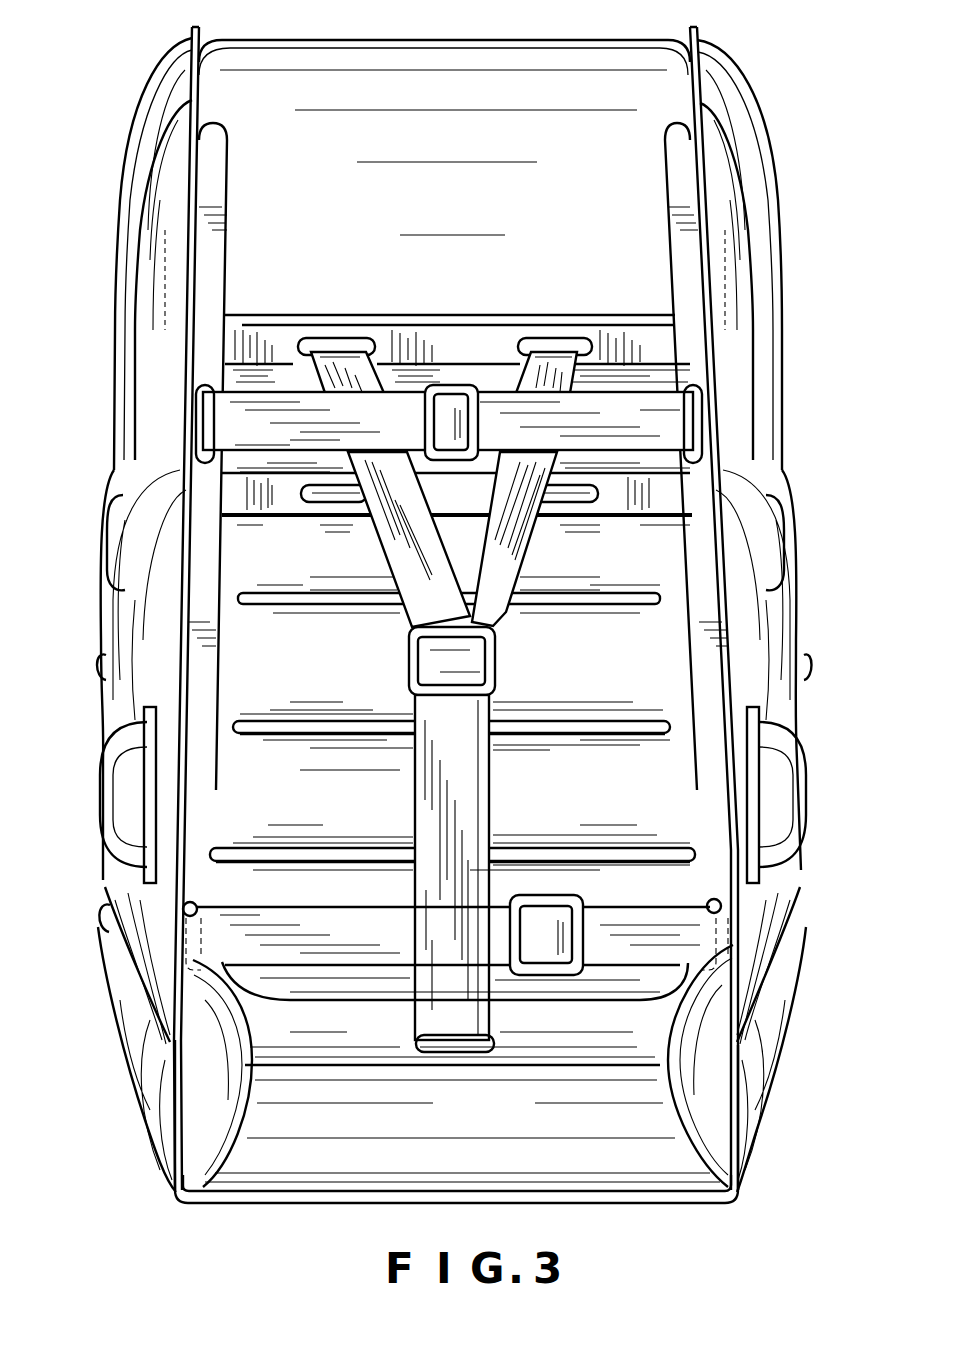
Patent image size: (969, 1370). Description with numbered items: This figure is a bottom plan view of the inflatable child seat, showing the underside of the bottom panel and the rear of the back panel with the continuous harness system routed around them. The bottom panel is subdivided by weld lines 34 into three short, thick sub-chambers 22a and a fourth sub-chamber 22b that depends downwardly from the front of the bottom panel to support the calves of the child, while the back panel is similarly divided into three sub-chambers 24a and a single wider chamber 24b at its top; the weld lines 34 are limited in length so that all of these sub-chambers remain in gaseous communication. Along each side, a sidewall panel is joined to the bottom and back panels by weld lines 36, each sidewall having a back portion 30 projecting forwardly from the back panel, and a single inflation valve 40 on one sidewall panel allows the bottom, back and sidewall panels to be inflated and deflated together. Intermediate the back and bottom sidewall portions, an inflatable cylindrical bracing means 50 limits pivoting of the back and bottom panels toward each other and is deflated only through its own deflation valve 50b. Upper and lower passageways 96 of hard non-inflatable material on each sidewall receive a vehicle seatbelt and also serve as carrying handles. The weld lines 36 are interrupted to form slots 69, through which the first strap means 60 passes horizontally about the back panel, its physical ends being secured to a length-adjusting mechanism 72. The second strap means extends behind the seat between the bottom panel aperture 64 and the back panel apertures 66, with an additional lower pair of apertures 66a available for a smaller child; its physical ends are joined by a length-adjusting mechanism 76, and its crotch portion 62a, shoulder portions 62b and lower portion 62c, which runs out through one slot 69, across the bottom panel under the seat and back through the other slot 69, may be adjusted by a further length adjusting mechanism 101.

The sub-chamber 22a is at (620, 775).
The fourth sub-chamber 22b is at (330, 1170).
The sub-chamber 24a is at (600, 330).
The wider chamber 24b is at (482, 74).
The back portion 30 is at (165, 75).
The weld lines 34 is at (492, 305).
The weld lines 36 is at (222, 150).
The inflation valve 40 is at (102, 930).
The bracing means 50 is at (101, 640).
The deflation valve 50b is at (98, 672).
The first releasable strap means 60 is at (295, 398).
The portion of second strap means 62a is at (418, 750).
The shoulder portions 62b is at (393, 530).
The portion of second strap means 62c is at (297, 935).
The bottom panel aperture 64 is at (460, 1052).
The back panel apertures 66 is at (322, 338).
The additional back panel apertures 66a is at (320, 505).
The slots 69 is at (207, 386).
The length-adjusting mechanism 72 is at (448, 385).
The length-adjusting mechanism 76 is at (410, 666).
The passageways 96 is at (112, 516).
The length adjusting mechanism 101 is at (548, 896).